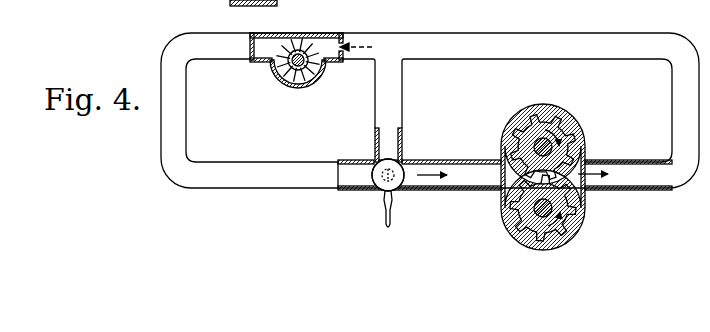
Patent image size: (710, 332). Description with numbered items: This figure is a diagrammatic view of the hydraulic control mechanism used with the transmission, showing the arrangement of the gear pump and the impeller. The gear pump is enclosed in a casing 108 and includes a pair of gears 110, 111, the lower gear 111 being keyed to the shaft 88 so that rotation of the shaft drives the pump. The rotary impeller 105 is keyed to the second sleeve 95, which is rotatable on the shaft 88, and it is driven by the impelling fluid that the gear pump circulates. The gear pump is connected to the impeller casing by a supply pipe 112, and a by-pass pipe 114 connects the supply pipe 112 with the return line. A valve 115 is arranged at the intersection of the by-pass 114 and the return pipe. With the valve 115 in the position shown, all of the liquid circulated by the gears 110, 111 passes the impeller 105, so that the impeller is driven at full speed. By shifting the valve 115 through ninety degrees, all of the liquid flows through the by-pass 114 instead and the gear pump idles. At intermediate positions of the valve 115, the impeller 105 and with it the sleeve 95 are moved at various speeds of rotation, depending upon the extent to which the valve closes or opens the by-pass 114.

The shaft 88 is at (301, 84).
The second sleeve 95 is at (284, 80).
The rotary impeller 105 is at (301, 52).
The casing for the gear pump 108 is at (584, 146).
The gear 110 is at (527, 118).
The gear 111 is at (565, 236).
The supply pipe 112 is at (404, 29).
The by-pass pipe 114 is at (401, 102).
The valve 115 is at (399, 160).